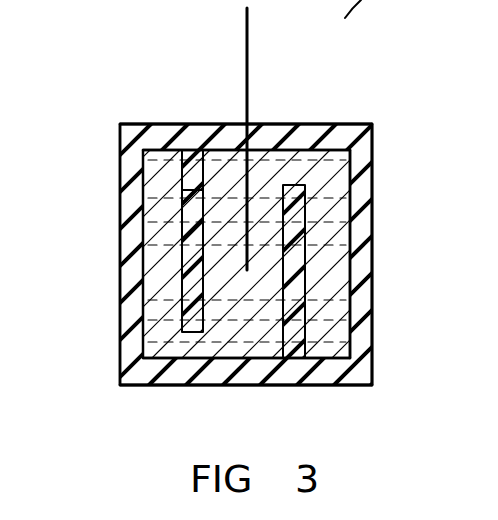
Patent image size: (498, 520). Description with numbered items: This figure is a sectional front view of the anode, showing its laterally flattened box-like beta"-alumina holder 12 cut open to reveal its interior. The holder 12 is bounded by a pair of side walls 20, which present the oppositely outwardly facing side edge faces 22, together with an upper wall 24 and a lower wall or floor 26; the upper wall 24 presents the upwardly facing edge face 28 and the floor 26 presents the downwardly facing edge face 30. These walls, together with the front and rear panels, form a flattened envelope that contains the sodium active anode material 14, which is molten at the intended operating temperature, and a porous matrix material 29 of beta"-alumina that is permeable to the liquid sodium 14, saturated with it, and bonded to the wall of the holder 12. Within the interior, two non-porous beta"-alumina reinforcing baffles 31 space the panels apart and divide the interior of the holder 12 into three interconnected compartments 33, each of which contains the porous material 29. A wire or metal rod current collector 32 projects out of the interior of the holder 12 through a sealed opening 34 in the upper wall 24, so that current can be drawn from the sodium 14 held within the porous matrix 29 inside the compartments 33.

The beta"-alumina holder 12 is at (409, 120).
The sodium active anode material 14 is at (398, 254).
The porous matrix material 29 is at (330, 317).
The side walls 20 is at (145, 254).
The side edge faces 22 is at (388, 184).
The upper wall 24 is at (195, 127).
The lower wall or floor 26 is at (300, 373).
The upwardly facing edge face 28 is at (297, 107).
The downwardly facing edge face 30 is at (196, 399).
The reinforcing baffles 31 is at (197, 228).
The current collector 32 is at (249, 57).
The compartments 33 is at (319, 256).
The sealed opening 34 is at (180, 178).